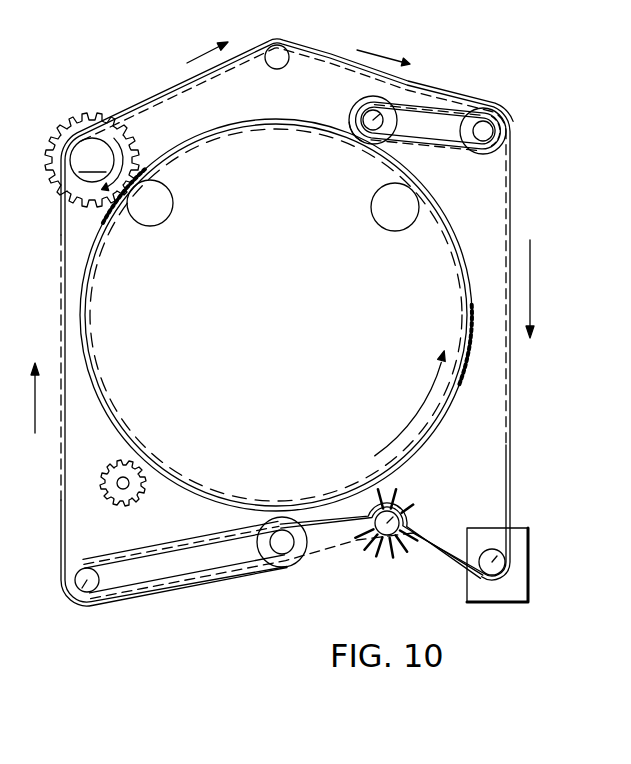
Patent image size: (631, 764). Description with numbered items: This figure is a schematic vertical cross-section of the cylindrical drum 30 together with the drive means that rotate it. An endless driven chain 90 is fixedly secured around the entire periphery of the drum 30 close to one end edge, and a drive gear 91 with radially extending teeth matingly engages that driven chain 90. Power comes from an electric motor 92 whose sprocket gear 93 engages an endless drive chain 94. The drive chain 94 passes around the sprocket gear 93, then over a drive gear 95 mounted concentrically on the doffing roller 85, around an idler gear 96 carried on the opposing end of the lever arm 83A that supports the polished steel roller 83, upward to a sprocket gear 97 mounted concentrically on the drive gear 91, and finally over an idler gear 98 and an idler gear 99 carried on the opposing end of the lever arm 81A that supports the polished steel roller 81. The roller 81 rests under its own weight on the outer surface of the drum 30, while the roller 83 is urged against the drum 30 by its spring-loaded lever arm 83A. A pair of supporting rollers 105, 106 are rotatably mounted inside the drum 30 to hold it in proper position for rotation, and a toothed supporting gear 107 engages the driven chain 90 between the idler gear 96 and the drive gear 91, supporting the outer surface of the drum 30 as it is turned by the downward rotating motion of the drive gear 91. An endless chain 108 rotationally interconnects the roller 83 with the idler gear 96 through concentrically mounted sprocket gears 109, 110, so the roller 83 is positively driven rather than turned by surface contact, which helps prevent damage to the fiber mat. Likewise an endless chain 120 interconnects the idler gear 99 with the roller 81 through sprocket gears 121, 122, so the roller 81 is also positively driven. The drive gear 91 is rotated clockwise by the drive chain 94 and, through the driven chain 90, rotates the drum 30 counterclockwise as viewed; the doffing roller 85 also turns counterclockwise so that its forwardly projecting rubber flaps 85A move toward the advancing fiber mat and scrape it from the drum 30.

The cylindrical drum 30 is at (450, 232).
The polished steel roller 81 is at (358, 60).
The lever arm 81A is at (433, 125).
The polished steel roller 83 is at (293, 566).
The lever arm 83A is at (178, 565).
The doffing roller 85 is at (372, 548).
The rubber flaps 85A is at (396, 556).
The driven chain 90 is at (460, 340).
The drive gear 91 is at (56, 148).
The electric motor 92 is at (528, 582).
The sprocket gear 93 is at (500, 562).
The drive chain 94 is at (512, 440).
The drive gear 95 is at (388, 520).
The idler gear 96 is at (83, 605).
The sprocket gear 97 is at (92, 160).
The idler gear 98 is at (280, 52).
The idler gear 99 is at (497, 152).
The supporting roller 105 is at (160, 200).
The supporting roller 106 is at (390, 213).
The supporting gear 107 is at (142, 480).
The endless chain 108 is at (212, 540).
The sprocket gear 109 is at (282, 540).
The sprocket gear 110 is at (80, 582).
The endless chain 120 is at (450, 110).
The sprocket gear 121 is at (483, 131).
The sprocket gear 122 is at (356, 140).